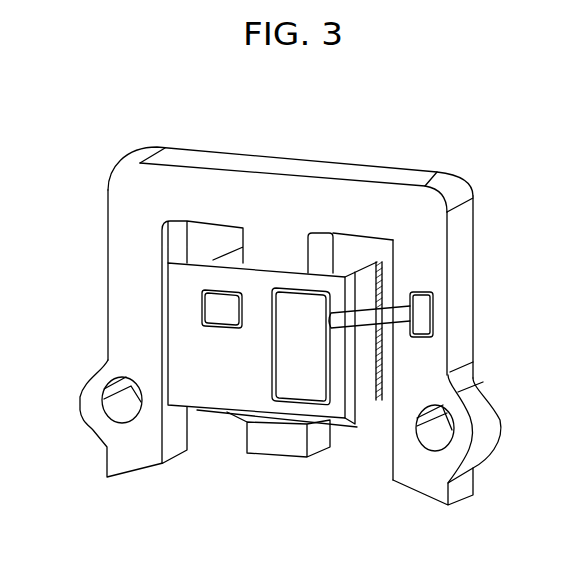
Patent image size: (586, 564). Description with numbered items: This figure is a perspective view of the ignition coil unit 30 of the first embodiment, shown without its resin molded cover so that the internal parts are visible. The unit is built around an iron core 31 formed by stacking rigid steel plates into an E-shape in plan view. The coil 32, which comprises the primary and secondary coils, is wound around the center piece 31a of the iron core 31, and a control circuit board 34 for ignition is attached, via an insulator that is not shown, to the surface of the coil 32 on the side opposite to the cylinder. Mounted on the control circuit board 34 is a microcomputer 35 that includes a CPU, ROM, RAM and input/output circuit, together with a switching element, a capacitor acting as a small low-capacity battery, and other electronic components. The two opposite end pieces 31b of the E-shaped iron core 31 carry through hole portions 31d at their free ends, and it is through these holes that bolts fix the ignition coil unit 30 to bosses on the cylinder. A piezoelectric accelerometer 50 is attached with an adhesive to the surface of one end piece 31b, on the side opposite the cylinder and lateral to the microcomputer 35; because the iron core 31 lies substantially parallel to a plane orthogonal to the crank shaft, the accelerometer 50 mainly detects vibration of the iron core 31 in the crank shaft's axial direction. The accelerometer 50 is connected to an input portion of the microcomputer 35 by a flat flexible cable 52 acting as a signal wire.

The ignition coil unit 30 is at (354, 157).
The iron core 31 is at (160, 177).
The center piece 31a is at (271, 442).
The end pieces 31b is at (138, 223).
The through hole portions 31d is at (105, 405).
The coil 32 is at (378, 398).
The control circuit board 34 is at (262, 282).
The microcomputer 35 is at (290, 310).
The accelerometer 50 is at (423, 313).
The flexible cable 52 is at (403, 307).